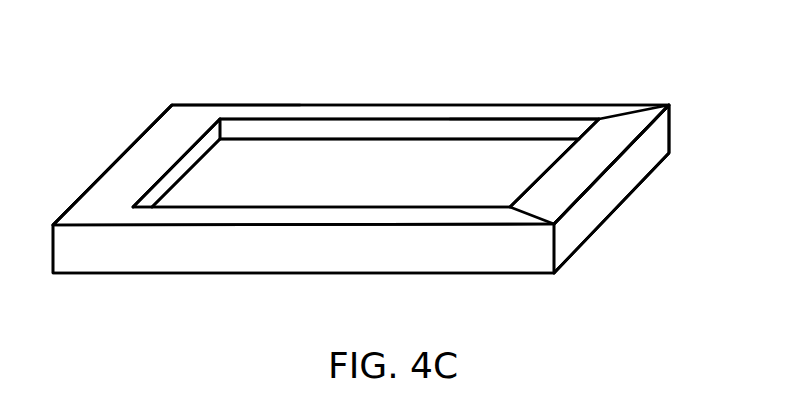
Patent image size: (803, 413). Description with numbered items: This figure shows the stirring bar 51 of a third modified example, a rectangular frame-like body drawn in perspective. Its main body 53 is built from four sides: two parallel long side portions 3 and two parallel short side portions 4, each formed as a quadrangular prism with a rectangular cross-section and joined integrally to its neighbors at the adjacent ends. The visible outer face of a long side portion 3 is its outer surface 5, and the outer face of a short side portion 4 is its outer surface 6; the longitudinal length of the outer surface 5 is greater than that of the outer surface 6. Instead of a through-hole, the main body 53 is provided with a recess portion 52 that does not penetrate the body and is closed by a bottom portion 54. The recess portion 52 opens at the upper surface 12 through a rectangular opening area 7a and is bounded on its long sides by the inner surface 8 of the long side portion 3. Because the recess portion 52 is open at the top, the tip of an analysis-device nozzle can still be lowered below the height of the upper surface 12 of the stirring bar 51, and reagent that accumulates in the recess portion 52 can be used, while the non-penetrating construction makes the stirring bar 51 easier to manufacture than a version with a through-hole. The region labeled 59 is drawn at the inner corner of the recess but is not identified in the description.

The stirring bar 51 is at (353, 92).
The long side portion 3 is at (390, 113).
The short side portion 4 is at (110, 186).
The outer surface of the long side portion 5 is at (267, 248).
The outer surface of the short side portion 6 is at (595, 208).
The opening area 7a is at (463, 131).
The inner surface of the long side portion 8 is at (527, 127).
The upper surface 12 is at (615, 120).
The recess portion 52 is at (313, 153).
The main body 53 is at (192, 118).
The bottom portion 54 is at (470, 187).
The inner corner 59 is at (170, 177).